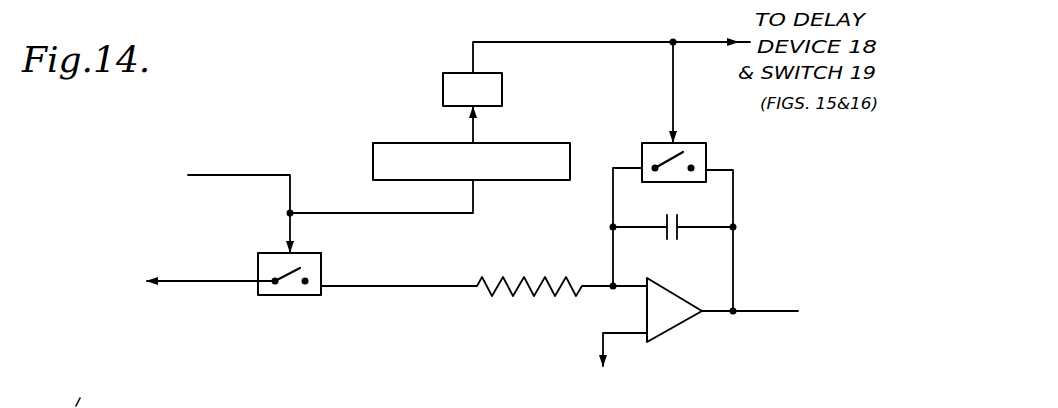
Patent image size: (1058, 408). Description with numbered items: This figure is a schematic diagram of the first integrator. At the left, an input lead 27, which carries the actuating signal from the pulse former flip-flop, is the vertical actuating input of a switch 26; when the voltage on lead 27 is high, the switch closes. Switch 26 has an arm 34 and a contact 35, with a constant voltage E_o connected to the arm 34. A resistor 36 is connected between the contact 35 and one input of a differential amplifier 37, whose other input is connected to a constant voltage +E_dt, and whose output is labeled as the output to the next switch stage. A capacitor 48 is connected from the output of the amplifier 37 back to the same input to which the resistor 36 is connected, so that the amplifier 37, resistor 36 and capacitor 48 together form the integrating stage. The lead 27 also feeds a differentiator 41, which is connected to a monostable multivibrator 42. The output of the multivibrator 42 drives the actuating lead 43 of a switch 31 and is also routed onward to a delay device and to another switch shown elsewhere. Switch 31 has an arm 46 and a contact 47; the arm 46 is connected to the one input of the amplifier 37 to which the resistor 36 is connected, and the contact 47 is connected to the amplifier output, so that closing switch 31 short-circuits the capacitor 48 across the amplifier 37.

The switch 26 is at (223, 288).
The input lead 27 is at (258, 175).
The switch 31 is at (690, 142).
The arm 34 is at (280, 277).
The contact 35 is at (305, 290).
The resistor 36 is at (505, 277).
The differential amplifier 37 is at (672, 327).
The differentiator 41 is at (392, 143).
The monostable multivibrator 42 is at (502, 86).
The actuating lead 43 is at (675, 84).
The arm 46 is at (668, 162).
The contact 47 is at (695, 164).
The capacitor 48 is at (672, 240).